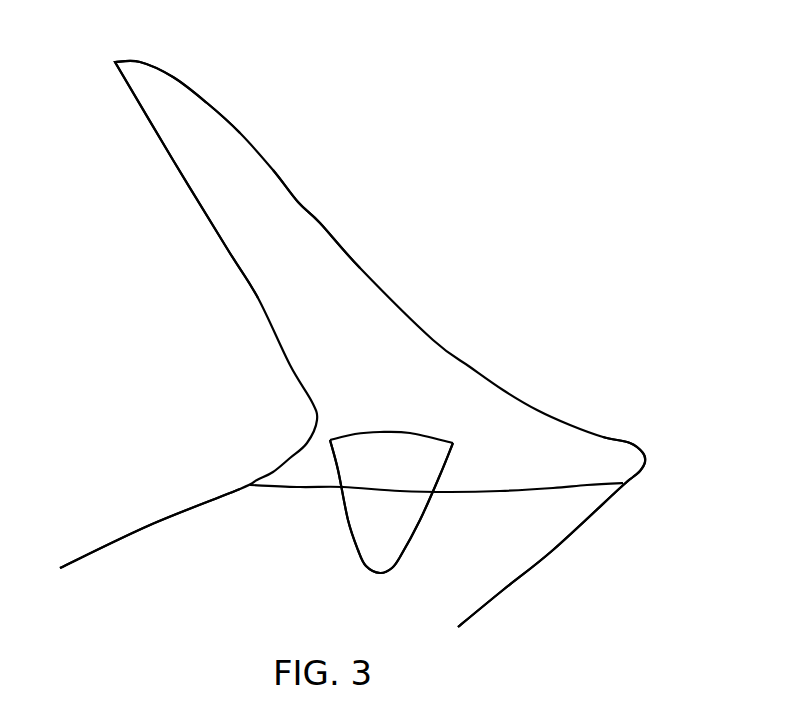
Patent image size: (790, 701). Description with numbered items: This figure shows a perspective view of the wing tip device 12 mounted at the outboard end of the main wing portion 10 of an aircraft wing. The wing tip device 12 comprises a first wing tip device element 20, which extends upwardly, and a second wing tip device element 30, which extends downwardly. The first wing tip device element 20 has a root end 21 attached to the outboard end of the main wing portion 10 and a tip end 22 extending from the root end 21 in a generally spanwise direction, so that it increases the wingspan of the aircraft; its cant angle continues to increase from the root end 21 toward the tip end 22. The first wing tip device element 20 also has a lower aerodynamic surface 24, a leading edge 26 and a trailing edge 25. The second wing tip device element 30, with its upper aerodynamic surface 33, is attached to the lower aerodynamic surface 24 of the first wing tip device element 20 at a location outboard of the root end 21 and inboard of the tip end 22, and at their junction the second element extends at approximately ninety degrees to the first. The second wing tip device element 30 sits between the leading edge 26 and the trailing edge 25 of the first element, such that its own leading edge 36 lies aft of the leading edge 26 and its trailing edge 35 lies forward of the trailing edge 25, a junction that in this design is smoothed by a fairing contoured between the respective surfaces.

The main wing portion 10 is at (165, 545).
The wing tip device 12 is at (350, 324).
The first wing tip device element 20 is at (420, 353).
The root end 21 is at (563, 493).
The tip end 22 is at (112, 60).
The lower aerodynamic surface 24 is at (213, 133).
The trailing edge 25 is at (223, 247).
The leading edge 26 is at (320, 223).
The second wing tip device element 30 is at (390, 548).
The upper aerodynamic surface 33 is at (383, 508).
The trailing edge 35 is at (340, 500).
The leading edge 36 is at (420, 522).